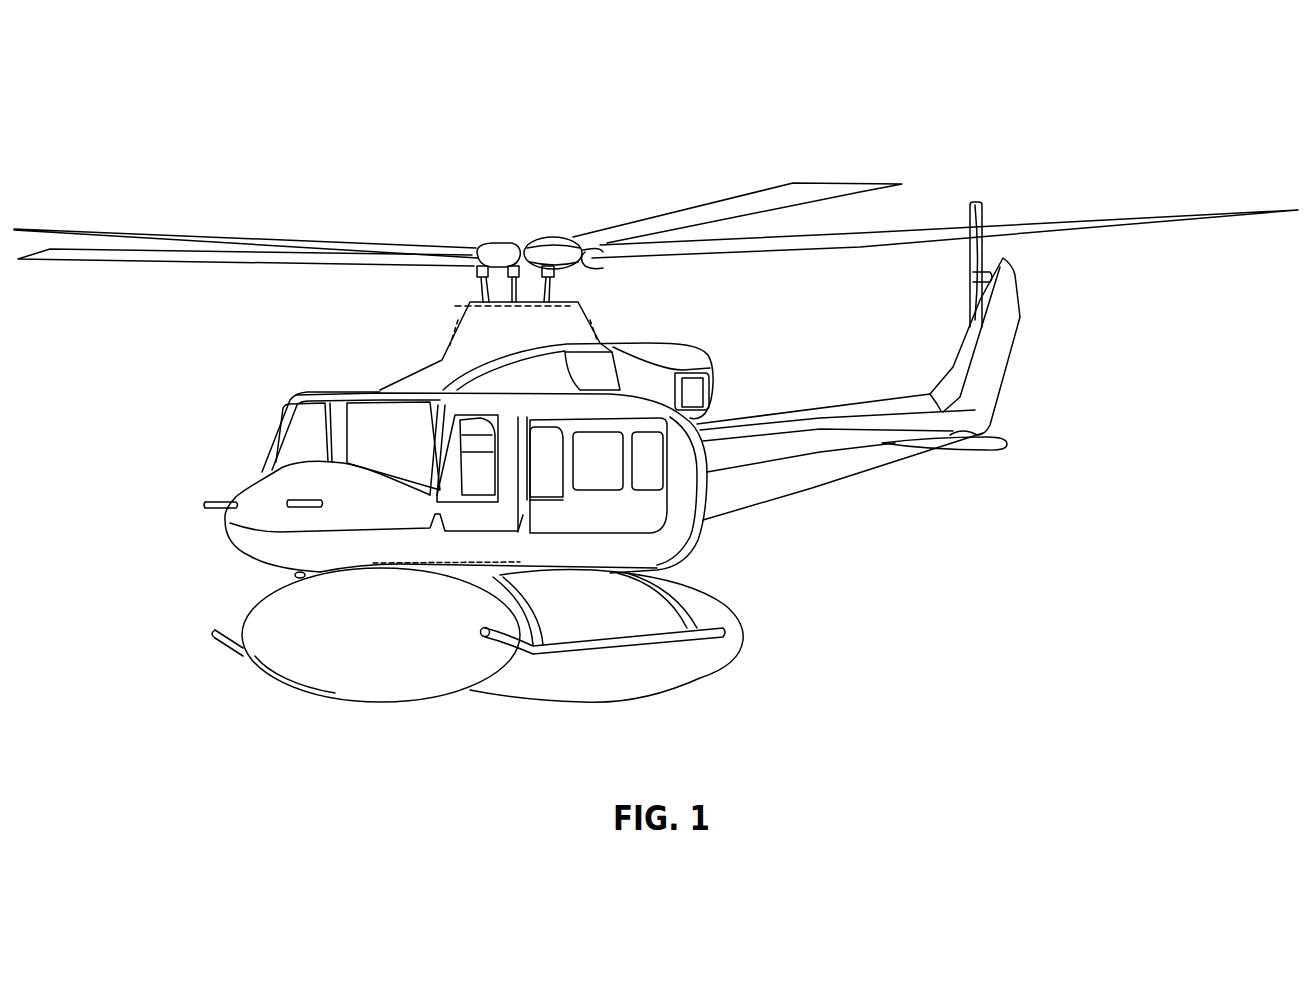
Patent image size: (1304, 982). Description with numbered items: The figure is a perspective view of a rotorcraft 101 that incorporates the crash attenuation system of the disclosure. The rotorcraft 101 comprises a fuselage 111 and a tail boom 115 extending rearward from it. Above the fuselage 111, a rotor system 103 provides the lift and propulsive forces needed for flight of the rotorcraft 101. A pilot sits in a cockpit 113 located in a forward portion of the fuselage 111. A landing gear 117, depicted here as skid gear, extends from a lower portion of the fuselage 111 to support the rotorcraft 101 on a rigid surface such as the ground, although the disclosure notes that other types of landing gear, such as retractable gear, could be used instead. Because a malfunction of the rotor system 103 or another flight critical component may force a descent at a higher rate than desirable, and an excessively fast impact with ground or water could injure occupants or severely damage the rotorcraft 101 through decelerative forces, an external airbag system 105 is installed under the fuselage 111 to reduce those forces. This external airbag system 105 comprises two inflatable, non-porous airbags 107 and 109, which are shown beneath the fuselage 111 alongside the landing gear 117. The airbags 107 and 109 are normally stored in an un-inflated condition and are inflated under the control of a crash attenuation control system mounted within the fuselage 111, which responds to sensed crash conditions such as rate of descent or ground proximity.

The rotorcraft 101 is at (404, 177).
The rotor system 103 is at (258, 242).
The external airbag system 105 is at (383, 727).
The airbag 107 is at (272, 678).
The airbag 109 is at (720, 675).
The fuselage 111 is at (703, 547).
The cockpit 113 is at (293, 396).
The tail boom 115 is at (843, 481).
The landing gear 117 is at (213, 637).